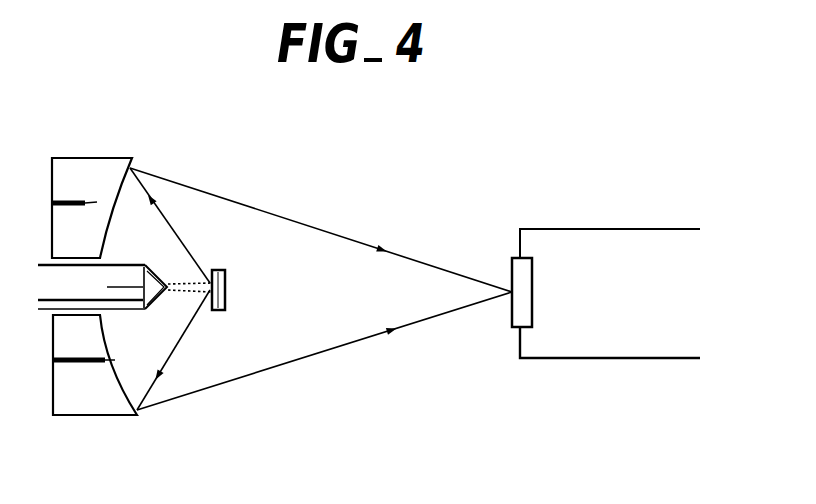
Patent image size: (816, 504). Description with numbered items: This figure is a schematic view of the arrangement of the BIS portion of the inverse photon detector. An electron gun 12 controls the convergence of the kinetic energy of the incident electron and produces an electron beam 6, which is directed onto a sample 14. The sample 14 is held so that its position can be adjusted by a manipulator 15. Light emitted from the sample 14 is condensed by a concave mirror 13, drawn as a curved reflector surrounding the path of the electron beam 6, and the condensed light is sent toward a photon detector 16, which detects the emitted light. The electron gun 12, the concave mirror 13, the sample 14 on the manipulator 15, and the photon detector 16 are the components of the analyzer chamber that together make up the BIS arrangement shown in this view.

The electron beam 6 is at (193, 268).
The electron gun 12 is at (127, 262).
The concave mirror 13 is at (83, 400).
The sample 14 is at (228, 272).
The manipulator 15 is at (228, 305).
The photon detector 16 is at (620, 312).